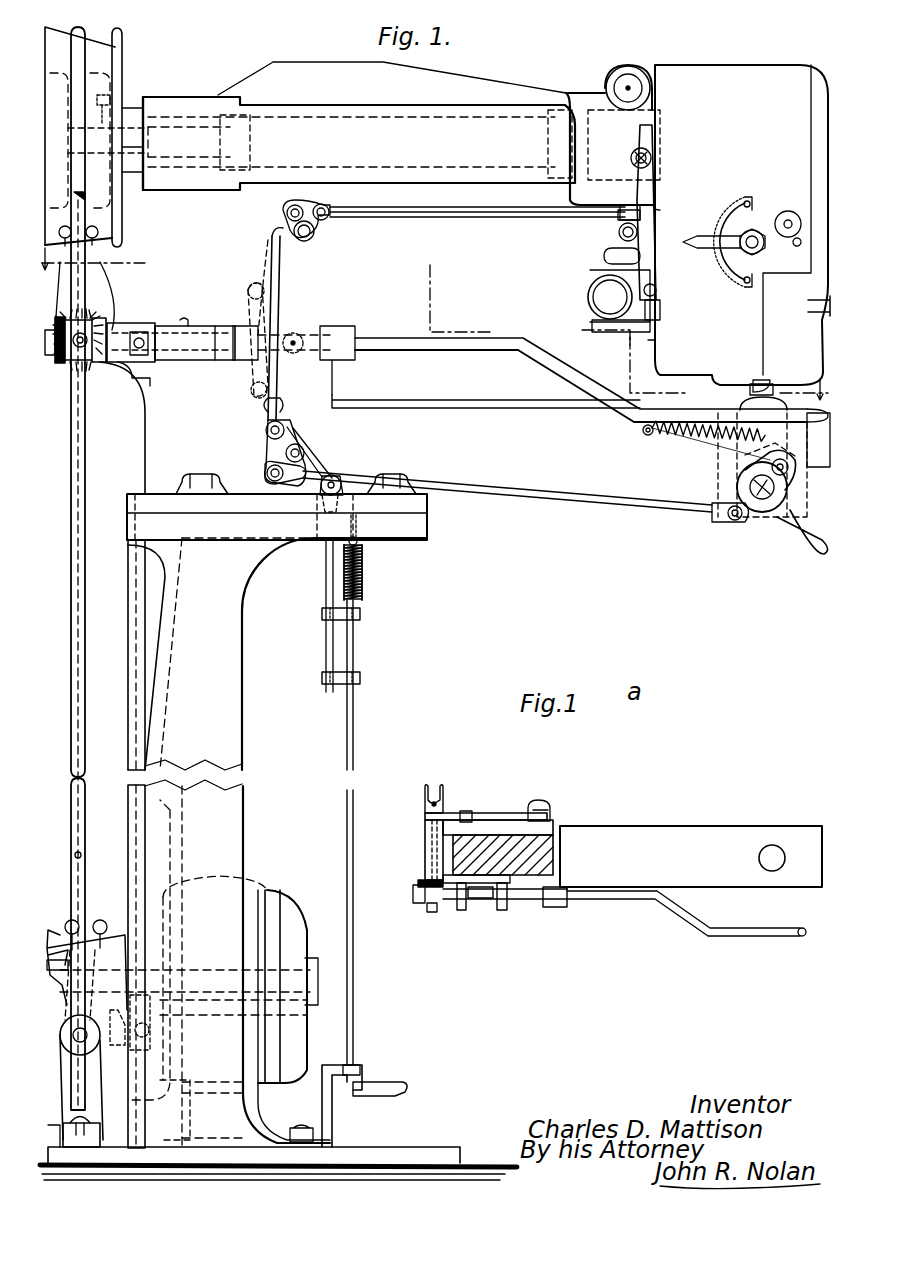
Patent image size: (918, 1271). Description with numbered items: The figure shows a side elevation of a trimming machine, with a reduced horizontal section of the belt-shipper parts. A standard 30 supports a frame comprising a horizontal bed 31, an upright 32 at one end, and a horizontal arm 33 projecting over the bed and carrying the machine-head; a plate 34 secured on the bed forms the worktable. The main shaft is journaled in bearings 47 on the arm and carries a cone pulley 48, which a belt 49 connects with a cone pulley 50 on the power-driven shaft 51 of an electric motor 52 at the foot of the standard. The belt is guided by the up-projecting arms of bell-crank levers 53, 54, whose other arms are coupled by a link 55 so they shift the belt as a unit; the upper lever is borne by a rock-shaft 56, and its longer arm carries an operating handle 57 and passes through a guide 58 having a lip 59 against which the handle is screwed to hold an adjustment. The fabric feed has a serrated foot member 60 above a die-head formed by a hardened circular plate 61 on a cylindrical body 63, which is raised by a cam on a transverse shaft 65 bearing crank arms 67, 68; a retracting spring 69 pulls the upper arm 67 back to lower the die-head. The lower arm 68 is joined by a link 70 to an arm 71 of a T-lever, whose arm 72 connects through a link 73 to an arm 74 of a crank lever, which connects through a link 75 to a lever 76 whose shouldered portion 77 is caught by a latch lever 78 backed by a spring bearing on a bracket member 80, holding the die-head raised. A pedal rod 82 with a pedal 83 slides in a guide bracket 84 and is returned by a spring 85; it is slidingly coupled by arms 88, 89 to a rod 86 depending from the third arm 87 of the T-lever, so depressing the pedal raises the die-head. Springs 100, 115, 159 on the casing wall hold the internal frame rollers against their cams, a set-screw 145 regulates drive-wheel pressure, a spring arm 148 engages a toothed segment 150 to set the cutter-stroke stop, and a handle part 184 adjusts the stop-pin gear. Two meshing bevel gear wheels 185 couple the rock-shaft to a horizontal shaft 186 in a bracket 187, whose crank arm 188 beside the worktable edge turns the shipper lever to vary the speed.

In FIG. 1, the standard 30 is at (225, 725).
In FIG. 1, the horizontal bed 31 is at (305, 490).
In FIG. 1, the upright 32 is at (300, 300).
In FIG. 1, the horizontal arm 33 is at (520, 84).
In FIG. 1, the plate 34 is at (405, 408).
In FIG. 1A, the plate 34 is at (642, 838).
In FIG. 1, the bearings 47 is at (345, 110).
In FIG. 1, the cone pulley 48 is at (105, 58).
In FIG. 1, the belt 49 is at (80, 35).
In FIG. 1A, the belt 49 is at (432, 912).
In FIG. 1, the cone pulley 50 is at (100, 958).
In FIG. 1, the power driven shaft 51 is at (300, 985).
In FIG. 1, the electric motor 52 is at (270, 888).
In FIG. 1, the bell-crank lever 53 is at (90, 320).
In FIG. 1A, the bell-crank lever 53 is at (445, 808).
In FIG. 1, the bell-crank lever 54 is at (110, 1043).
In FIG. 1, the link 55 is at (140, 635).
In FIG. 1, the rock-shaft 56 is at (66, 365).
In FIG. 1A, the rock-shaft 56 is at (428, 870).
In FIG. 1, the operating handle 57 is at (292, 335).
In FIG. 1A, the operating handle 57 is at (540, 802).
In FIG. 1, the guide 58 is at (250, 292).
In FIG. 1A, the guide 58 is at (518, 830).
In FIG. 1, the flange or lip 59 is at (290, 300).
In FIG. 1A, the flange or lip 59 is at (535, 822).
In FIG. 1, the serrated foot member 60 is at (780, 395).
In FIG. 1, the circular plate 61 is at (752, 392).
In FIG. 1A, the circular plate 61 is at (775, 850).
In FIG. 1, the cylindrical body 63 is at (750, 468).
In FIG. 1, the transverse shaft 65 is at (765, 500).
In FIG. 1, the upper crank arm 67 is at (795, 472).
In FIG. 1, the lower crank arm 68 is at (735, 520).
In FIG. 1, the retracting spring 69 is at (690, 440).
In FIG. 1, the link 70 is at (640, 505).
In FIG. 1, the arm of T-lever 71 is at (268, 455).
In FIG. 1, the arm of T-lever 72 is at (318, 437).
In FIG. 1, the link 73 is at (278, 380).
In FIG. 1, the arm of crank lever 74 is at (283, 207).
In FIG. 1, the link 75 is at (472, 215).
In FIG. 1, the lever 76 is at (650, 200).
In FIG. 1, the shouldered portion 77 is at (660, 292).
In FIG. 1, the latch lever 78 is at (658, 310).
In FIG. 1, the stationary bracket member 80 is at (600, 325).
In FIG. 1, the vertically-disposed rod 82 is at (355, 990).
In FIG. 1, the pedal 83 is at (383, 1082).
In FIG. 1, the guide bracket 84 is at (338, 1100).
In FIG. 1, the retracting spring 85 is at (360, 570).
In FIG. 1, the rod 86 is at (326, 580).
In FIG. 1, the third arm of T-lever 87 is at (325, 470).
In FIG. 1, the arm 88 is at (320, 618).
In FIG. 1, the arm 89 is at (322, 678).
In FIG. 1, the spring 100 is at (590, 297).
In FIG. 1, the spring 115 is at (612, 258).
In FIG. 1, the set-screw 145 is at (788, 215).
In FIG. 1, the spring arm 148 is at (697, 246).
In FIG. 1, the toothed segment 150 is at (748, 205).
In FIG. 1, the spring 159 is at (618, 232).
In FIG. 1, the handle part 184 is at (739, 225).
In FIG. 1, the meshing bevel gear wheels 185 is at (82, 322).
In FIG. 1A, the meshing bevel gear wheels 185 is at (418, 905).
In FIG. 1, the horizontal shaft 186 is at (183, 345).
In FIG. 1A, the horizontal shaft 186 is at (480, 900).
In FIG. 1, the bracket 187 is at (140, 362).
In FIG. 1A, the bracket 187 is at (490, 880).
In FIG. 1, the horizontal arm 188 is at (650, 418).
In FIG. 1A, the horizontal arm 188 is at (768, 932).